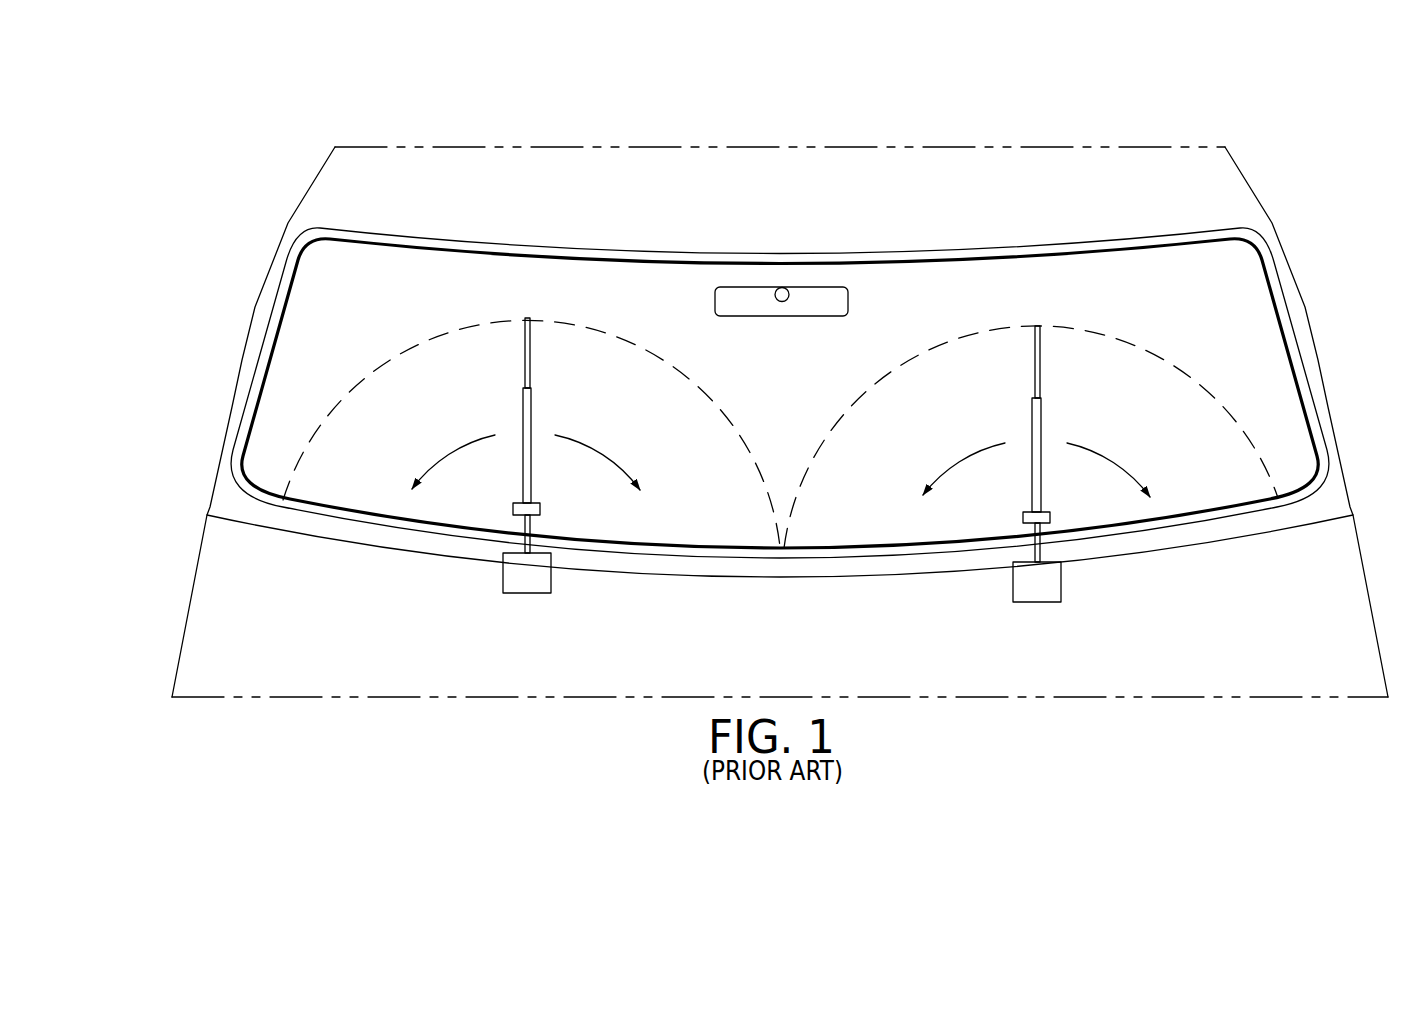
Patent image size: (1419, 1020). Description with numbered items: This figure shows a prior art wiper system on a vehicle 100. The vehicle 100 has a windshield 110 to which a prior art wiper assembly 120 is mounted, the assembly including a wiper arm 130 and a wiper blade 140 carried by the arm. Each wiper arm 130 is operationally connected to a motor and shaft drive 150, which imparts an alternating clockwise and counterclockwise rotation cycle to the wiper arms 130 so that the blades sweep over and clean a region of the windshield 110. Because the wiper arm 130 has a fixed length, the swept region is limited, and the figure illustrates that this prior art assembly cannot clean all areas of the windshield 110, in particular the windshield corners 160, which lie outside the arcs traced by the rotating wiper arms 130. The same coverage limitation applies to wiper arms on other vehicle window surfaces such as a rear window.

The vehicle 100 is at (286, 141).
The windshield 110 is at (282, 370).
The wiper assembly 120 is at (412, 553).
The wiper arm 130 is at (523, 408).
The wiper blade 140 is at (525, 345).
The motor and shaft drive 150 is at (503, 571).
The windshield corners 160 is at (257, 470).